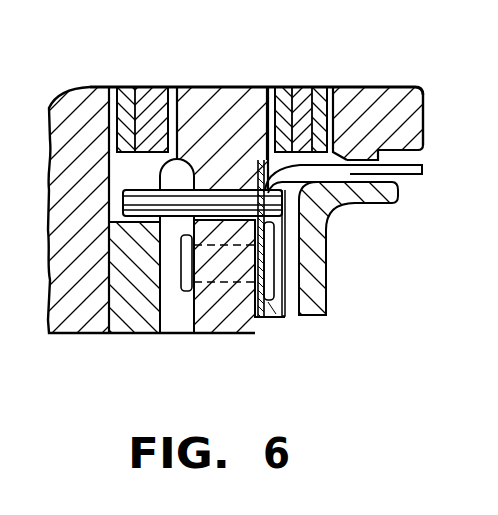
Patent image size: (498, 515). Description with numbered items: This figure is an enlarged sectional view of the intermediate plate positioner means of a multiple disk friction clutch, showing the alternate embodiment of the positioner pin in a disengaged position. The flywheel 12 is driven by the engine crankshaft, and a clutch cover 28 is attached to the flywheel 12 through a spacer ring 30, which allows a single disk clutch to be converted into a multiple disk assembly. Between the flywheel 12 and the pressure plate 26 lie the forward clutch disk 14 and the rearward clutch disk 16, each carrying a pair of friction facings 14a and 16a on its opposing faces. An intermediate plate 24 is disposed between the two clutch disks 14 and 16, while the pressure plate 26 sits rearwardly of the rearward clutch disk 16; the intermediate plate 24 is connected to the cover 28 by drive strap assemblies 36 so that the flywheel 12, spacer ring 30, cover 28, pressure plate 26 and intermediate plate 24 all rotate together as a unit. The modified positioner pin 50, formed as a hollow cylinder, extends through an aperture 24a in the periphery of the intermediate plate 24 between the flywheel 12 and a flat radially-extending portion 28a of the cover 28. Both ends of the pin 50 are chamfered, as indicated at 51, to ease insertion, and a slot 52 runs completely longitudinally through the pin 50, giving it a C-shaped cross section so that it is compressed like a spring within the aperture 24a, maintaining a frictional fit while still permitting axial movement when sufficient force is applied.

The flywheel 12 is at (70, 312).
The forward clutch disk 14 is at (143, 112).
The friction facings 14a is at (168, 84).
The rearward clutch disk 16 is at (350, 92).
The friction facings 16a is at (323, 84).
The intermediate plate 24 is at (220, 323).
The aperture 24a is at (232, 190).
The pressure plate 26 is at (395, 103).
The clutch cover 28 is at (345, 207).
The flat radially-extending portion 28a is at (285, 255).
The spacer ring 30 is at (128, 323).
The drive strap assemblies 36 is at (276, 314).
The modified positioner pin 50 is at (405, 168).
The chamfer 51 is at (128, 190).
The slot 52 is at (158, 210).